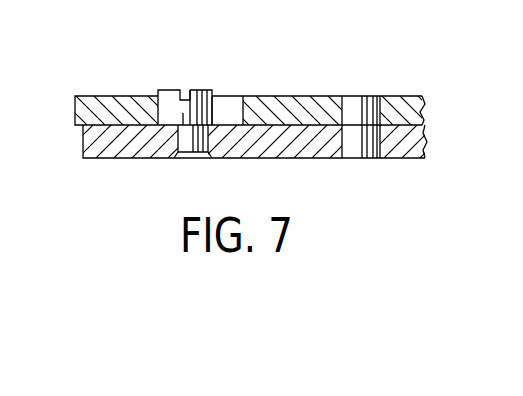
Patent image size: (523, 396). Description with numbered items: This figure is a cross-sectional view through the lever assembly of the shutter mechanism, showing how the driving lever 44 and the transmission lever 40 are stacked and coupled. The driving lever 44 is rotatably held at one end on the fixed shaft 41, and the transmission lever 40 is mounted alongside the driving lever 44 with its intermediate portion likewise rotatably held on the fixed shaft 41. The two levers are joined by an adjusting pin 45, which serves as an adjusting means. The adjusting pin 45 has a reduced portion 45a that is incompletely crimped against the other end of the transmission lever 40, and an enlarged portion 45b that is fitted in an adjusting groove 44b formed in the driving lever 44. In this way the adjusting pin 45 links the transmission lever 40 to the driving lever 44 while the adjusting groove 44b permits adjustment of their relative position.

The transmission lever 40 is at (297, 158).
The fixed shaft 41 is at (362, 107).
The driving lever 44 is at (100, 96).
The adjusting groove 44b is at (240, 113).
The adjusting pin 45 is at (202, 76).
The reduced portion 45a is at (195, 158).
The enlarged portion 45b is at (173, 101).